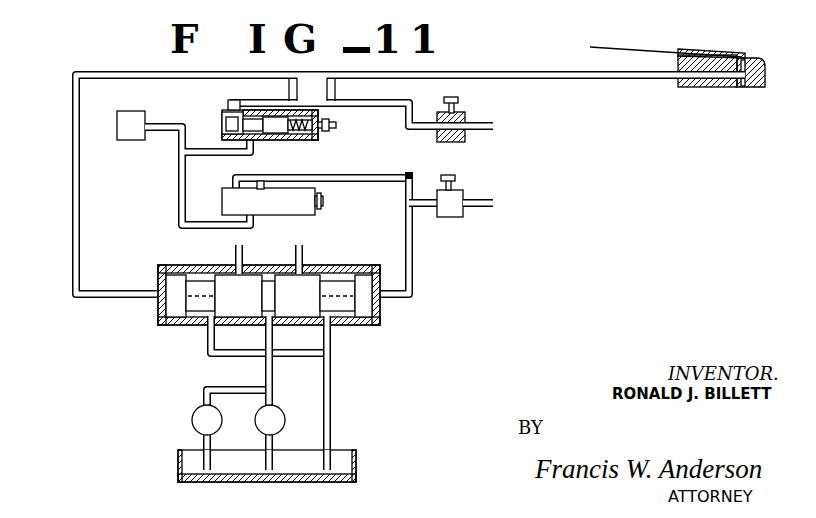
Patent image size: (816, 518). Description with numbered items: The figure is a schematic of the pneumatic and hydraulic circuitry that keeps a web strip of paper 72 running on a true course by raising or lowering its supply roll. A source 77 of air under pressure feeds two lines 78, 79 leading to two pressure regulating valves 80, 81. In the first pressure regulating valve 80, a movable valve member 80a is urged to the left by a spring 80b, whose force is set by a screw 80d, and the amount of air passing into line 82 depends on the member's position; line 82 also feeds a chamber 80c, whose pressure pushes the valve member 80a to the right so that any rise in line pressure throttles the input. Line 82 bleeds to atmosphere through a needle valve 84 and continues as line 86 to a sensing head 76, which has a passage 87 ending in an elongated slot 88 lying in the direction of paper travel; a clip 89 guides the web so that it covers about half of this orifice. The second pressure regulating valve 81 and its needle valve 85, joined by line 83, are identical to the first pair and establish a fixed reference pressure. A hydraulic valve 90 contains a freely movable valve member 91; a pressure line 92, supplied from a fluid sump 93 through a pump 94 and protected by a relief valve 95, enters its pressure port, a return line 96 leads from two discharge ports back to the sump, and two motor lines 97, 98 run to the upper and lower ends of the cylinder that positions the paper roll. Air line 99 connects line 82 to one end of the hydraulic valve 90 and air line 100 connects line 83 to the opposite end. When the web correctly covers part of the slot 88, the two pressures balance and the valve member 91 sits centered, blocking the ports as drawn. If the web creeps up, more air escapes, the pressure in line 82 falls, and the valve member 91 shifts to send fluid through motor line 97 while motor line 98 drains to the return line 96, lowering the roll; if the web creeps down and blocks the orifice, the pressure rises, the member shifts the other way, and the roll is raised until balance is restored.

The web strip of paper 72 is at (617, 45).
The sensing head 76 is at (712, 88).
The source of air under pressure 77 is at (128, 112).
The line 78 is at (198, 153).
The line 79 is at (178, 213).
The pressure regulating valve 80 is at (280, 126).
The movable valve member 80a is at (250, 106).
The spring 80b is at (311, 115).
The chamber 80c is at (230, 119).
The screw 80d is at (331, 128).
The pressure regulating valve 81 is at (313, 217).
The line 82 is at (311, 97).
The line 83 is at (342, 180).
The needle valve 84 is at (465, 118).
The needle valve 85 is at (460, 192).
The line 86 is at (505, 72).
The passage 87 is at (740, 85).
The elongated slot 88 is at (752, 62).
The clip 89 is at (693, 53).
The hydraulic valve 90 is at (238, 283).
The valve member 91 is at (312, 291).
The pressure line 92 is at (265, 368).
The fluid sump 93 is at (357, 470).
The pump 94 is at (275, 420).
The relief valve 95 is at (200, 420).
The return line 96 is at (336, 372).
The motor line 97 is at (296, 250).
The motor line 98 is at (235, 250).
The air line 99 is at (72, 190).
The air line 100 is at (415, 250).